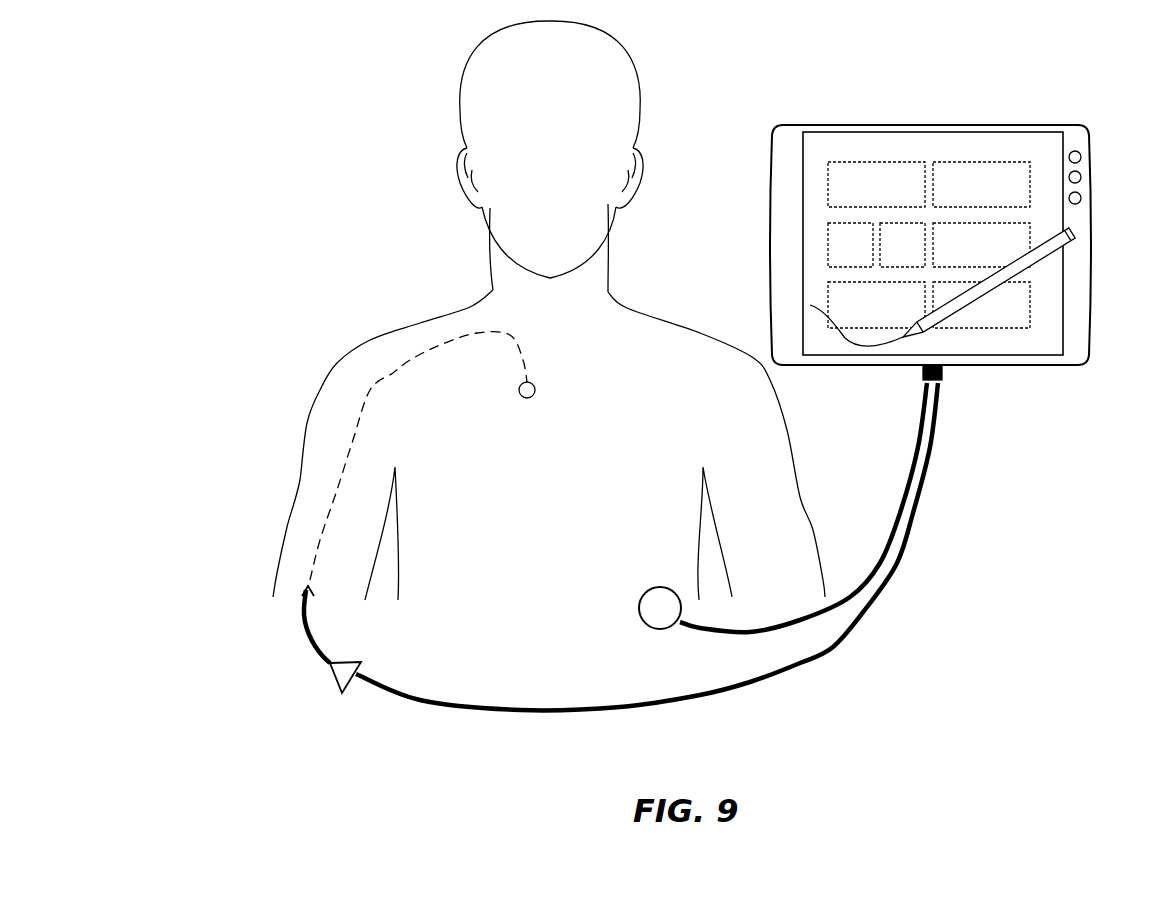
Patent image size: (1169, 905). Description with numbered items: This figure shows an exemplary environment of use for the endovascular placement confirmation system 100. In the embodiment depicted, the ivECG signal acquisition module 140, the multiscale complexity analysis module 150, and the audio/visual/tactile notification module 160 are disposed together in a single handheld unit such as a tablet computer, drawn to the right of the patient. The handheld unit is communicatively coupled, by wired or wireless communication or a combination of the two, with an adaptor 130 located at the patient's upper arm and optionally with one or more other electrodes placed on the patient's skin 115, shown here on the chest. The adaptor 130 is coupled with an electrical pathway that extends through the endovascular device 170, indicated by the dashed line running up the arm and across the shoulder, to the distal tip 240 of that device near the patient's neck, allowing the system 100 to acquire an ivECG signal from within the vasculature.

The endovascular placement confirmation system 100 is at (958, 219).
The electrode placed on the patient's skin 115 is at (643, 618).
The adaptor 130 is at (327, 670).
The ivECG signal acquisition module 140 is at (859, 193).
The multiscale complexity analysis module 150 is at (963, 193).
The audio/visual/tactile notification module 160 is at (963, 253).
The endovascular device 170 is at (303, 617).
The distal tip 240 is at (534, 385).